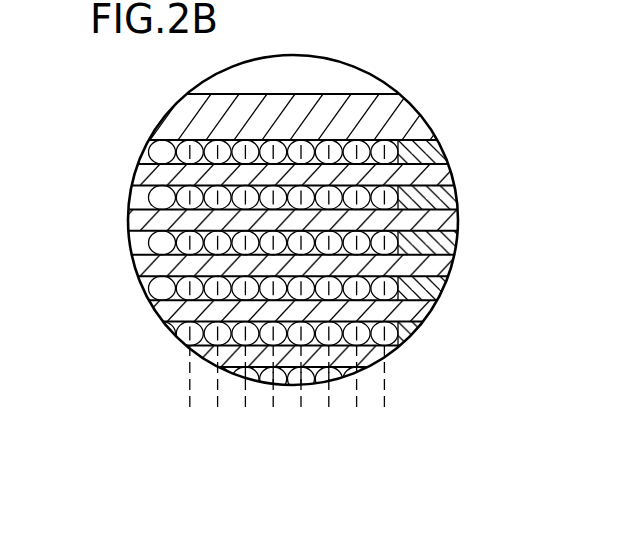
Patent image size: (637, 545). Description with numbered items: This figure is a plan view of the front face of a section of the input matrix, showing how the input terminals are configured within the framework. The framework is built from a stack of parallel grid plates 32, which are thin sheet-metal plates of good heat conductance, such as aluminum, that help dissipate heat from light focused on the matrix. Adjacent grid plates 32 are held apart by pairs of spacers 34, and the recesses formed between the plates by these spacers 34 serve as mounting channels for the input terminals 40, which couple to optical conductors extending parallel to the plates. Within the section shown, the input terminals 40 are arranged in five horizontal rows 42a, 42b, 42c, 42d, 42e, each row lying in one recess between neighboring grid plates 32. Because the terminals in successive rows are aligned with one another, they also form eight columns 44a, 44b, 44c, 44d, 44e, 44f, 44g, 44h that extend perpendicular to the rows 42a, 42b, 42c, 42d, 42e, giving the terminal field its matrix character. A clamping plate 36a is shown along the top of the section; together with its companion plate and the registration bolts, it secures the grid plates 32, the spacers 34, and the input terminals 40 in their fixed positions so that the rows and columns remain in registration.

The clamping plate 36a is at (280, 122).
The grid plate 32 is at (440, 178).
The spacer 34 is at (447, 160).
The input terminal 40 is at (388, 235).
The row of input terminals 42a is at (148, 150).
The row of input terminals 42b is at (136, 198).
The row of input terminals 42c is at (131, 241).
The row of input terminals 42d is at (140, 285).
The row of input terminals 42e is at (170, 330).
The column of input terminals 44a is at (188, 387).
The column of input terminals 44b is at (216, 400).
The column of input terminals 44c is at (246, 400).
The column of input terminals 44d is at (272, 402).
The column of input terminals 44e is at (300, 401).
The column of input terminals 44f is at (329, 402).
The column of input terminals 44g is at (357, 401).
The column of input terminals 44h is at (384, 393).